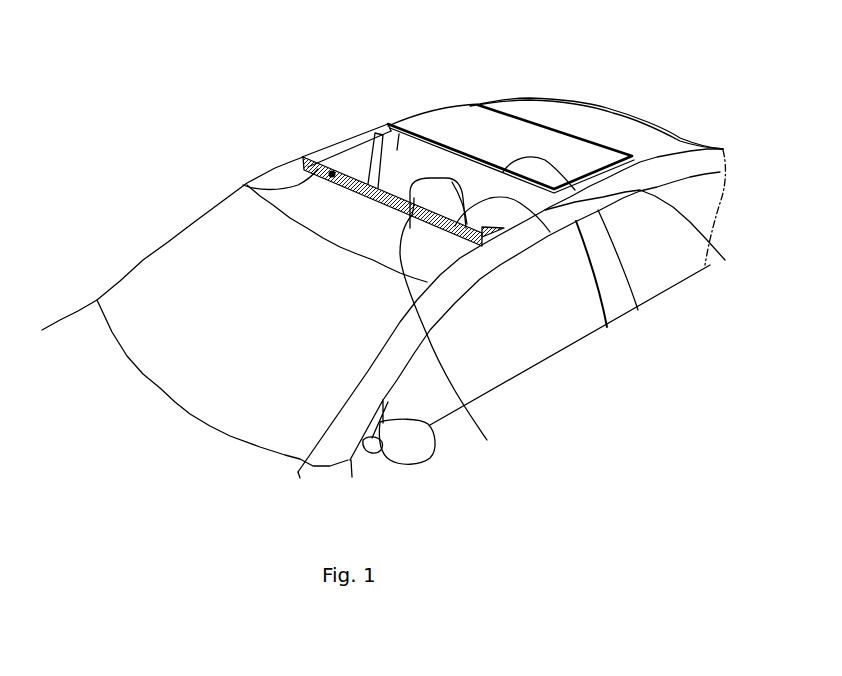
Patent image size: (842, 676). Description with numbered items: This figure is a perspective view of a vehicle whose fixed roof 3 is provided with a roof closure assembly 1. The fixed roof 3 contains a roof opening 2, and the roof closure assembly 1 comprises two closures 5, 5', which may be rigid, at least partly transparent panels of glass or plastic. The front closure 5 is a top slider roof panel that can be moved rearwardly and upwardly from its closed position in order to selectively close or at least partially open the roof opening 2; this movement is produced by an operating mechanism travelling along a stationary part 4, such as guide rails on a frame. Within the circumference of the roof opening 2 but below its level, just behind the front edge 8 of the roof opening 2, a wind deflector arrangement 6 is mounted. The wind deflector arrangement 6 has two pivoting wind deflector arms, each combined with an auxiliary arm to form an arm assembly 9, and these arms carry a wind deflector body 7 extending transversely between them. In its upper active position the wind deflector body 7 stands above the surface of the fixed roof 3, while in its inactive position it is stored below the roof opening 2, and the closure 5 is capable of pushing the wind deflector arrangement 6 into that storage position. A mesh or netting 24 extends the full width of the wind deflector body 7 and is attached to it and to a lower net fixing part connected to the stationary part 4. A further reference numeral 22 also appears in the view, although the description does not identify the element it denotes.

The roof closure assembly 1 is at (424, 97).
The roof opening 2 is at (362, 131).
The fixed roof 3 is at (290, 176).
The stationary part 4 is at (386, 126).
The front closure 5 is at (511, 107).
The closure 5' is at (660, 259).
The wind deflector arrangement 6 is at (287, 134).
The wind deflector body 7 is at (607, 328).
The front edge 8 is at (487, 440).
The arm assembly 9 is at (512, 242).
The rear pillar 22 is at (655, 264).
The netting 24 is at (261, 180).